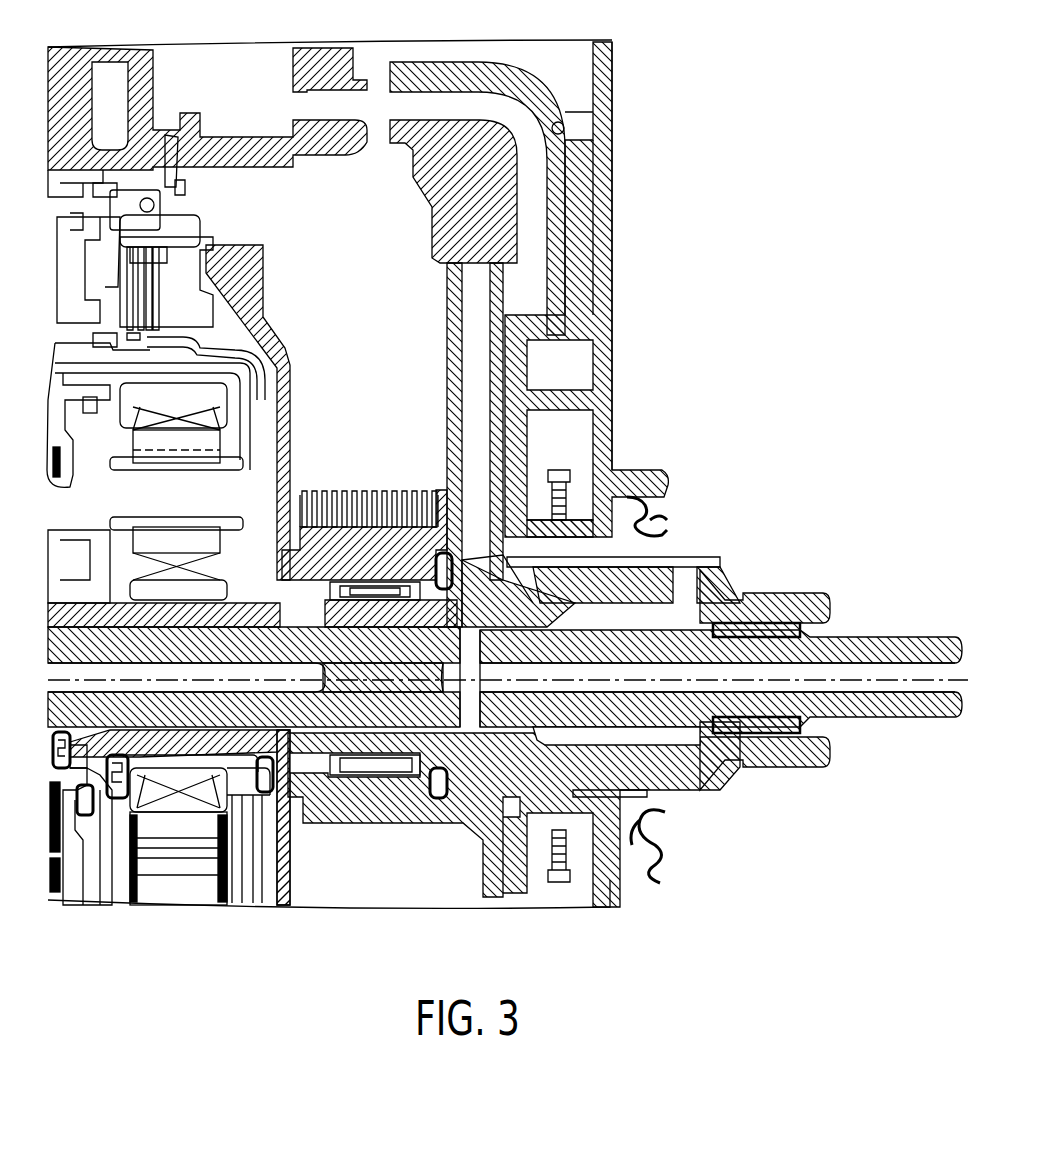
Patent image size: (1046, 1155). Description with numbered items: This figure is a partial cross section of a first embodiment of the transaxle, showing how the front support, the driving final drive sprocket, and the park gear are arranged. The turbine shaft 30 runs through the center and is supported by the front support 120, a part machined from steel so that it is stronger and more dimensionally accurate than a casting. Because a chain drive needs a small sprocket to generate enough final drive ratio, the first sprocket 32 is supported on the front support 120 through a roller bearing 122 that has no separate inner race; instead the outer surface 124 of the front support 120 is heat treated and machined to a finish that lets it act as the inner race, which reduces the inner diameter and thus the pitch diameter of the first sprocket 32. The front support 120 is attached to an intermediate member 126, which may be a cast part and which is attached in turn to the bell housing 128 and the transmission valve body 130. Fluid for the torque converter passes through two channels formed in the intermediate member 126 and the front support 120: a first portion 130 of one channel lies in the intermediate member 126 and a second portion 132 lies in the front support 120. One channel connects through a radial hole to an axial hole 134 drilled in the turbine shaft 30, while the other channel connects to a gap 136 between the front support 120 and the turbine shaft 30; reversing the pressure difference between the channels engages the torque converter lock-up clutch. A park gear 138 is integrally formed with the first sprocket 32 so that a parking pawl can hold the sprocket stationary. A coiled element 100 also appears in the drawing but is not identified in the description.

The turbine shaft 30 is at (912, 637).
The first sprocket 32 is at (358, 827).
The spring 100 is at (355, 492).
The front support 120 is at (446, 368).
The bearing 122 is at (392, 762).
The outer surface 124 is at (360, 758).
The intermediate member 126 is at (566, 217).
The bell housing 128 is at (612, 287).
The valve body 130 is at (262, 158).
The second portion of channel 132 is at (469, 492).
The hole 134 is at (811, 688).
The gap 136 is at (668, 740).
The park gear 138 is at (265, 264).